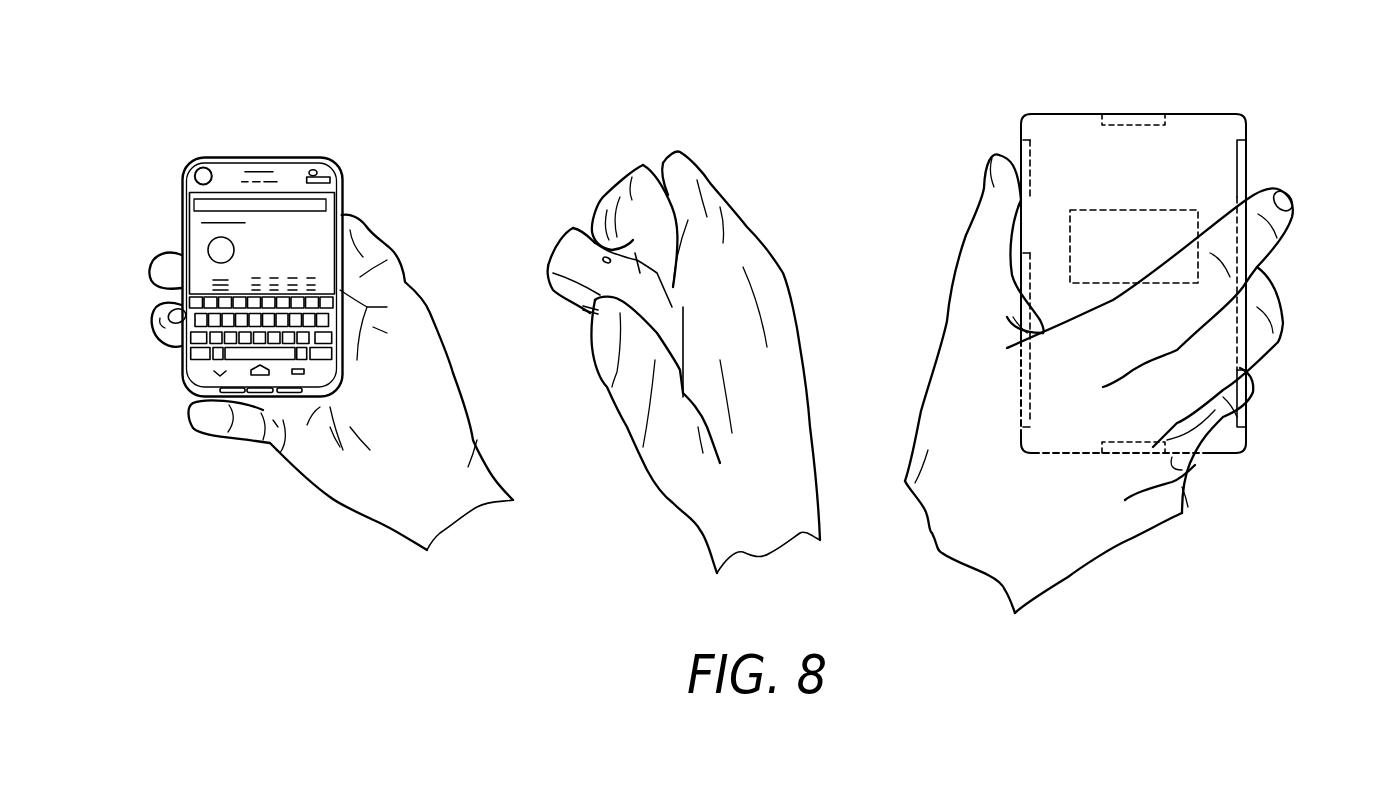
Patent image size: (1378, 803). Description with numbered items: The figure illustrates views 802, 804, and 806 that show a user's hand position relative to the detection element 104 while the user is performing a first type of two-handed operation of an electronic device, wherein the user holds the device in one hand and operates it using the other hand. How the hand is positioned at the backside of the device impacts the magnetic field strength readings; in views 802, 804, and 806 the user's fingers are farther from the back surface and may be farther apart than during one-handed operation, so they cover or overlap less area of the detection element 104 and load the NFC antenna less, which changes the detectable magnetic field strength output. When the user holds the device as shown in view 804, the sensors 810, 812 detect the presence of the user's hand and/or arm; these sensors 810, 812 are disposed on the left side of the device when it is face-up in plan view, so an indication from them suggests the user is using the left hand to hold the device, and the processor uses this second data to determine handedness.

The view 802 is at (446, 93).
The view 804 is at (805, 88).
The view 806 is at (1308, 106).
The detection element 104 is at (1175, 210).
The sensor 810 is at (1020, 289).
The sensor 812 is at (1020, 397).